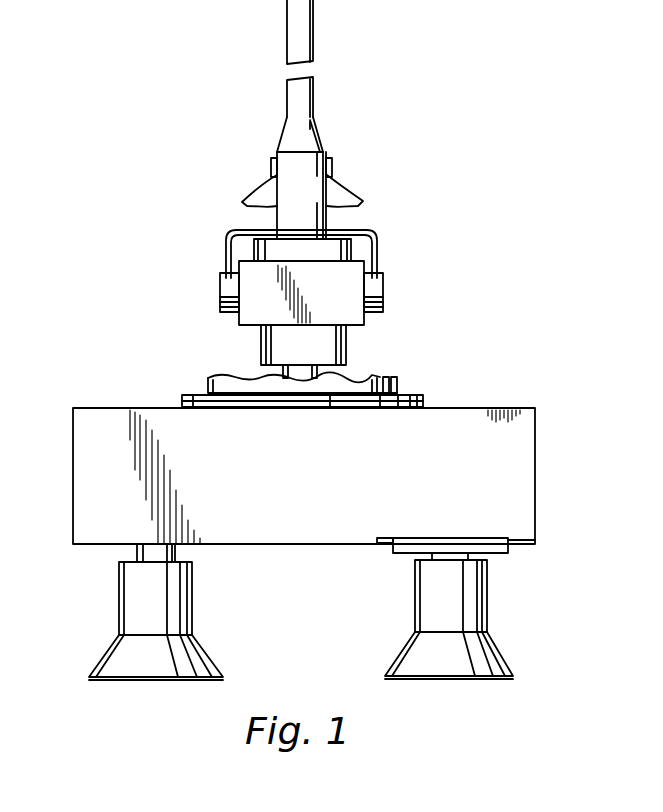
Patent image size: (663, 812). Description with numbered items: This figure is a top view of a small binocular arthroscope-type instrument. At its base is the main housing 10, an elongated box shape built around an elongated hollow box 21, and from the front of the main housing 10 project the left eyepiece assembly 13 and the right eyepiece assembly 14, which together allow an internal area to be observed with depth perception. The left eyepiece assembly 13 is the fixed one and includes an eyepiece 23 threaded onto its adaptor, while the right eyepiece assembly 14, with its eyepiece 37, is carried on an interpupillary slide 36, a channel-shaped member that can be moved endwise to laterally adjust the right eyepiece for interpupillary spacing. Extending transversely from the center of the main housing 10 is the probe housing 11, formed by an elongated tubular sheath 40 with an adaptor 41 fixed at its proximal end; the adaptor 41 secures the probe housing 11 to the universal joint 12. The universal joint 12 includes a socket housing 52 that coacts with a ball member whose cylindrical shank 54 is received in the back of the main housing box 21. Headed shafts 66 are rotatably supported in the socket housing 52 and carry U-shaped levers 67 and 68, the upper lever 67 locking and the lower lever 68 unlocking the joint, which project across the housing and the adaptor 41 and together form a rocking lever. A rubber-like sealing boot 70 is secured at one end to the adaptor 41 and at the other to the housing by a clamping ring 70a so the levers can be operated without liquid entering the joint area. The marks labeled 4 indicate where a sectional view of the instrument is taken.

The elongated tubular sheath 40 is at (290, 28).
The probe housing 11 is at (315, 91).
The adaptor 41 is at (287, 128).
The section line for FIG. 4 is at (285, 202).
The sealing boot 70 is at (360, 183).
The lower lever 68 is at (373, 233).
The upper lever 67 is at (377, 262).
The headed shafts 66 is at (220, 280).
The universal joint 12 is at (389, 303).
The socket housing 52 is at (247, 317).
The cylindrical shank 54 is at (297, 372).
The clamping ring 70a is at (192, 397).
The elongated hollow box 21 is at (442, 418).
The main housing 10 is at (303, 546).
The interpupillary slide 36 is at (405, 550).
The eyepiece 23 is at (127, 587).
The right leg 37 is at (477, 595).
The left eyepiece assembly 13 is at (166, 681).
The right eyepiece assembly 14 is at (448, 680).